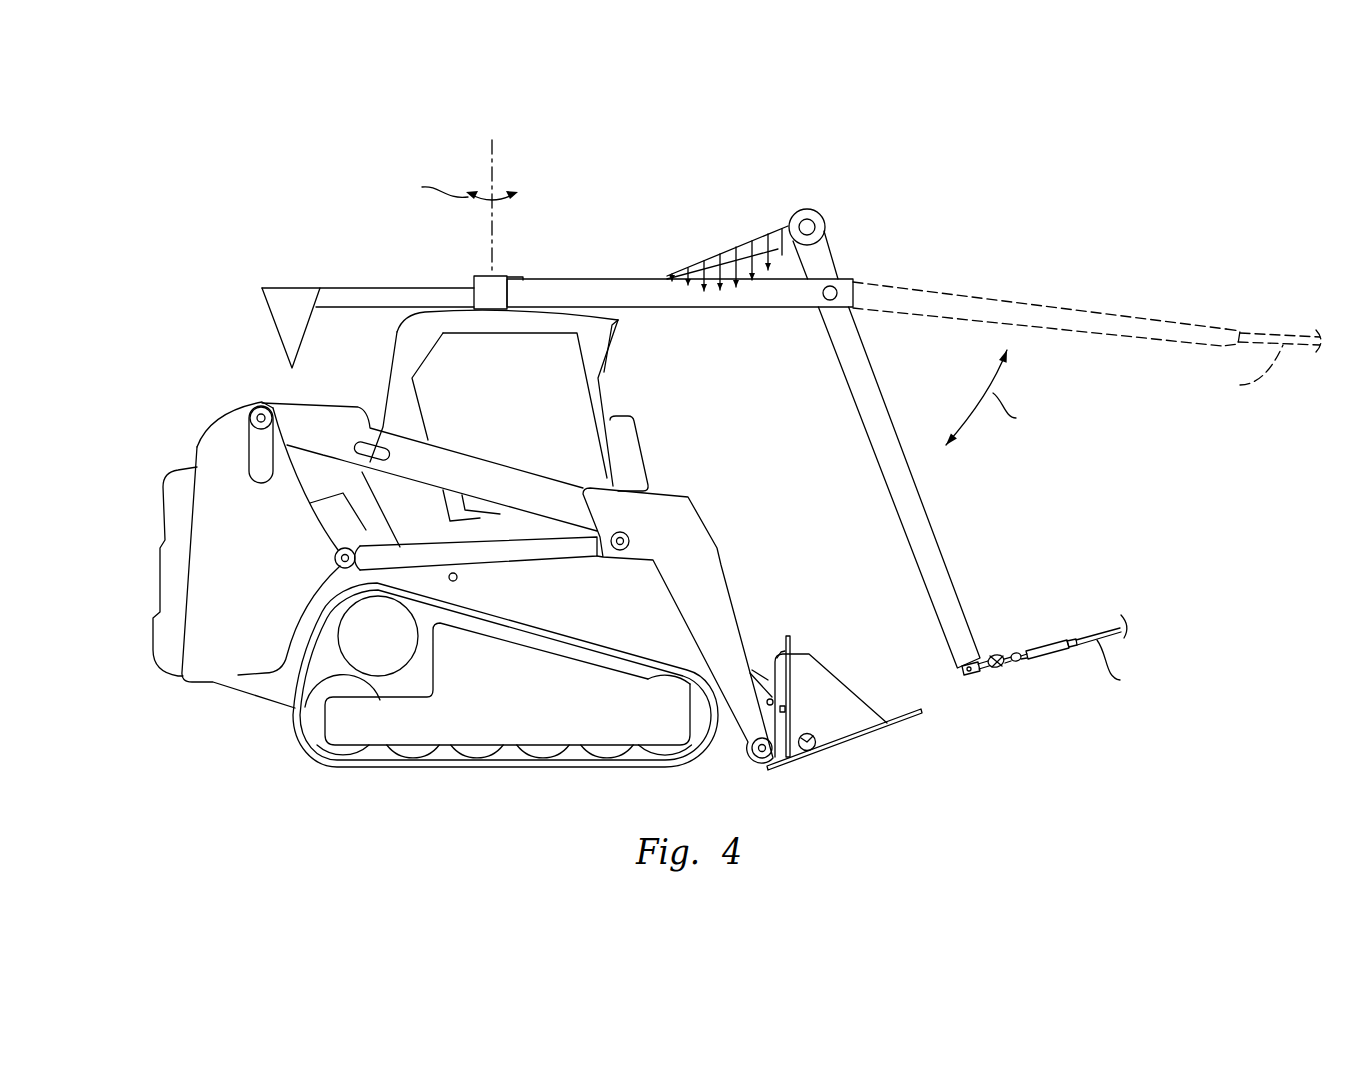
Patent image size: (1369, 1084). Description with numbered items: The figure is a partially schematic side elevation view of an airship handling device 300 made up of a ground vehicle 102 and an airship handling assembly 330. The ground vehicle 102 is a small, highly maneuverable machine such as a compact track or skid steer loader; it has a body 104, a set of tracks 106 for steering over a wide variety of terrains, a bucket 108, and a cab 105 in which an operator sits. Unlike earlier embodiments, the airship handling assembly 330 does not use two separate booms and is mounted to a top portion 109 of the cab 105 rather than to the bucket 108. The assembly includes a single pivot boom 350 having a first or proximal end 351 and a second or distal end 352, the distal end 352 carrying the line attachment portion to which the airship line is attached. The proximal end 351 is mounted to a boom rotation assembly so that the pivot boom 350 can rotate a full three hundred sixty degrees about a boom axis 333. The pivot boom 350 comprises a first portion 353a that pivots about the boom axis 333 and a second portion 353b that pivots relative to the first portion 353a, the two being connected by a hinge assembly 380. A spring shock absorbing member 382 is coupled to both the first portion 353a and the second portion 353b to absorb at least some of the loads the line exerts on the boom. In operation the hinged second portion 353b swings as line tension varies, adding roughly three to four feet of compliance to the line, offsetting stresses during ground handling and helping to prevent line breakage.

The ground vehicle 102 is at (205, 410).
The body 104 is at (212, 622).
The cab 105 is at (613, 350).
The set of tracks 106 is at (517, 772).
The bucket 108 is at (845, 727).
The top portion of the cab 109 is at (430, 318).
The airship handling device 300 is at (1062, 158).
The airship handling assembly 330 is at (861, 464).
The boom axis 333 is at (493, 157).
The pivot boom 350 is at (716, 302).
The first or proximal end 351 is at (520, 293).
The second or distal end 352 is at (963, 626).
The first portion 353a is at (678, 312).
The second portion 353b is at (918, 513).
The hinge assembly 380 is at (826, 297).
The spring shock absorbing member 382 is at (768, 222).